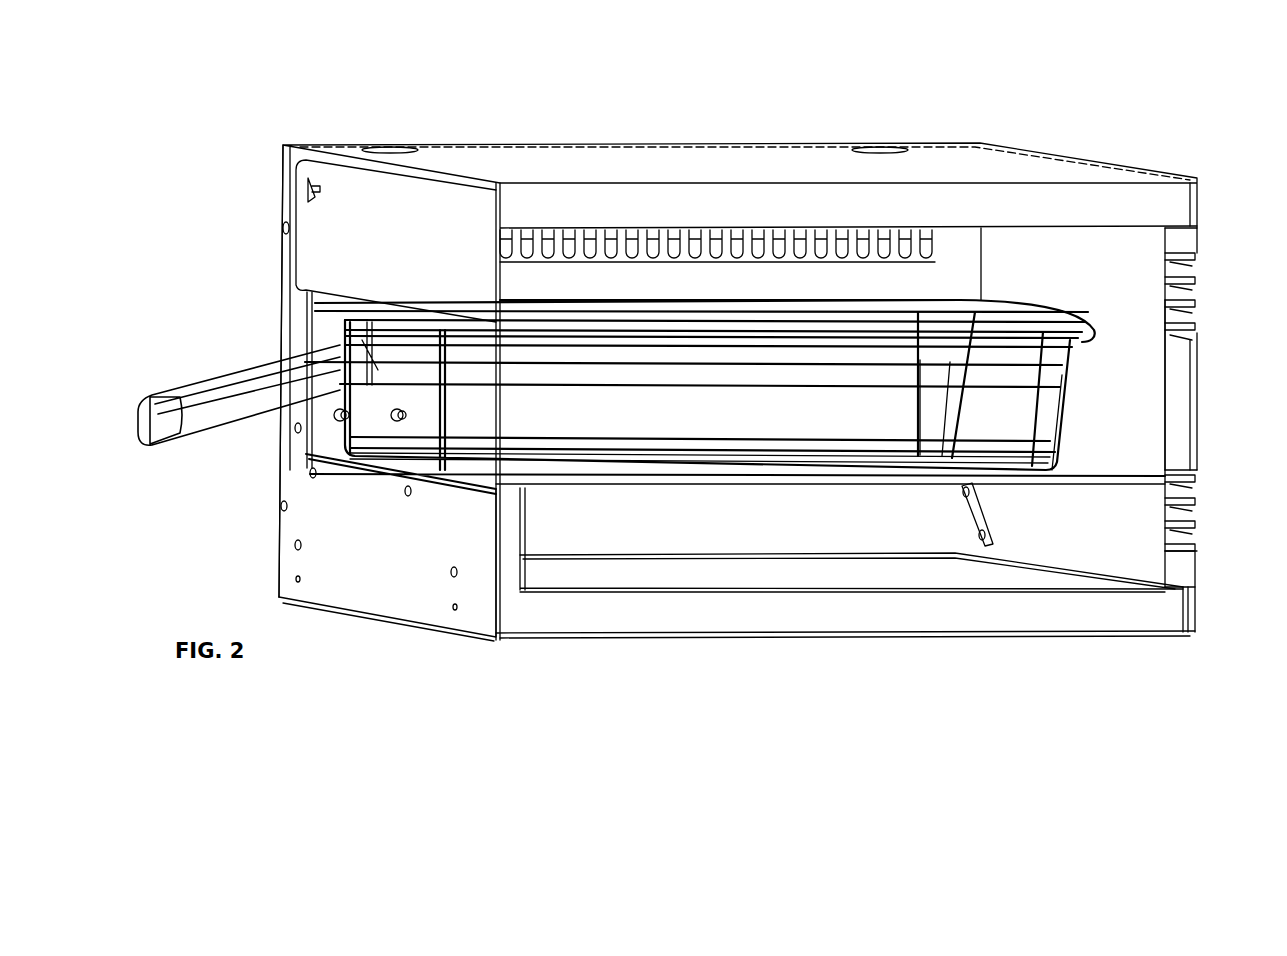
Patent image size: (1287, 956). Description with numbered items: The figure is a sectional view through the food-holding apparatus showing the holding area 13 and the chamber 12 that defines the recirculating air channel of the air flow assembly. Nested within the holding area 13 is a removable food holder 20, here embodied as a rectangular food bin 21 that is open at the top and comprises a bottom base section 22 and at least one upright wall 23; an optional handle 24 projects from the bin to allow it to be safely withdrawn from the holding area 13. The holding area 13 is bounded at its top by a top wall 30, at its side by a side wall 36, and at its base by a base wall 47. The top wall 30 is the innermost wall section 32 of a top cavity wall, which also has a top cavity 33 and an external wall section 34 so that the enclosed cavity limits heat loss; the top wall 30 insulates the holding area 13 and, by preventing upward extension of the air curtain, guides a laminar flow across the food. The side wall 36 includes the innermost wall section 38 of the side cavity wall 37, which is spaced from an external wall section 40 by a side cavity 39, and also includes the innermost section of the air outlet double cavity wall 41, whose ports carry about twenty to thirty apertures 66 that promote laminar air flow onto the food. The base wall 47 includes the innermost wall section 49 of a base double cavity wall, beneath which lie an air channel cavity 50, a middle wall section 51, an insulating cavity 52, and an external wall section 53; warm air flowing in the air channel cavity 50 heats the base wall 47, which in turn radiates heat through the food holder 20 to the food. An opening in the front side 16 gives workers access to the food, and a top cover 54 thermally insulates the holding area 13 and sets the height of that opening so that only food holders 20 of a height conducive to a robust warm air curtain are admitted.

The chamber 12 is at (1090, 150).
The holding area 13 is at (1132, 295).
The front side 16 is at (392, 592).
The removable food holder 20 is at (1064, 425).
The food bin 21 is at (1002, 403).
The bottom base section 22 is at (922, 470).
The upright wall 23 is at (682, 406).
The handle 24 is at (232, 354).
The top wall 30 is at (543, 226).
The innermost wall section 32 is at (1092, 232).
The top cavity 33 is at (1107, 202).
The external wall section 34 is at (613, 158).
The side wall 36 is at (1040, 262).
The side cavity wall 37 is at (367, 566).
The innermost wall section 38 is at (525, 532).
The side cavity 39 is at (502, 556).
The external wall section 40 is at (1205, 345).
The air outlet double cavity wall 41 is at (810, 275).
The base wall 47 is at (1172, 524).
The innermost wall section 49 is at (889, 486).
The air channel cavity 50 is at (618, 535).
The middle wall section 51 is at (1023, 593).
The insulating cavity 52 is at (749, 615).
The external wall section 53 is at (851, 637).
The top cover 54 is at (353, 222).
The apertures 66 is at (912, 236).